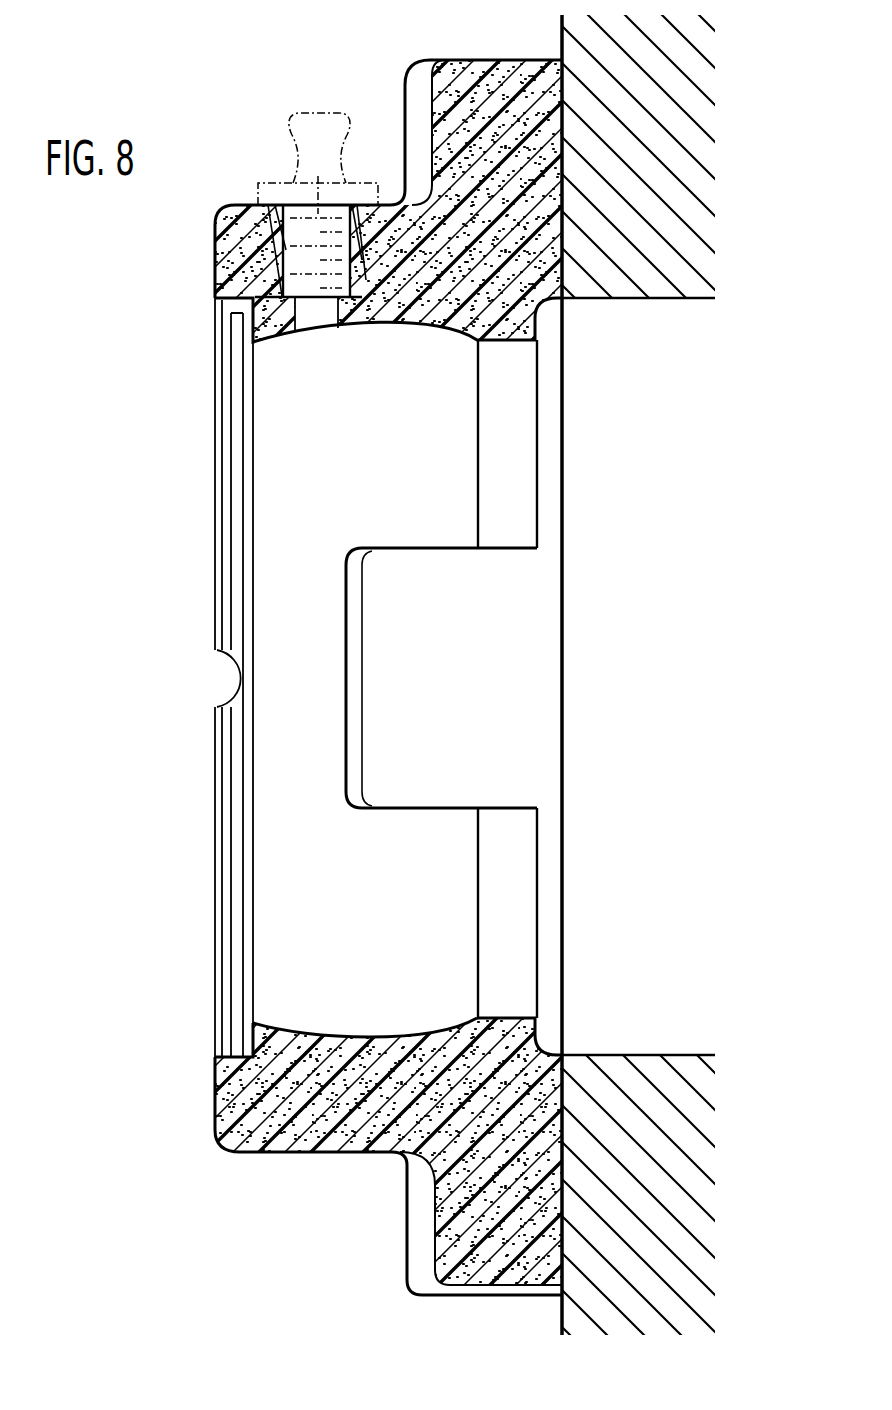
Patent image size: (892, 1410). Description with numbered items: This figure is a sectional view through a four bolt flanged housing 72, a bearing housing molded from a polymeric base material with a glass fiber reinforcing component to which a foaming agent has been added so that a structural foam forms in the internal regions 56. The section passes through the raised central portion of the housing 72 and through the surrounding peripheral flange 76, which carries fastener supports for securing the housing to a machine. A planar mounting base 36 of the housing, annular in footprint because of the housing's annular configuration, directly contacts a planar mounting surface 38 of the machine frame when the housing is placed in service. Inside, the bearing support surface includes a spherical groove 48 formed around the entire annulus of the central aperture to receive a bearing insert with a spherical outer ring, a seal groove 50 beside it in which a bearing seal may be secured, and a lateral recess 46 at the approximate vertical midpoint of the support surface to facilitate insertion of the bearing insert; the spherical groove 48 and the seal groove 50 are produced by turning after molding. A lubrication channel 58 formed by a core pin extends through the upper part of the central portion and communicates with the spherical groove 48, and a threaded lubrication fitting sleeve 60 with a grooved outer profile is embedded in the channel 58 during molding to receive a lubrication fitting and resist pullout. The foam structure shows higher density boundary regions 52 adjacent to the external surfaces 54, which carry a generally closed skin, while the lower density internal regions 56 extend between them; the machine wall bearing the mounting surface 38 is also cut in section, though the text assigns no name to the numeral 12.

The tank wall 12 is at (667, 203).
The planar mounting base 36 is at (565, 72).
The planar mounting surface 38 is at (560, 30).
The lateral recess 46 is at (478, 560).
The spherical groove 48 is at (350, 409).
The seal groove 50 is at (247, 322).
The boundary region 52 is at (285, 1047).
The external surface 54 is at (317, 1030).
The internal region 56 is at (500, 1198).
The lubrication channel 58 is at (312, 322).
The lubrication fitting sleeve 60 is at (268, 232).
The four bolt flanged housing 72 is at (192, 292).
The peripheral flange 76 is at (488, 92).